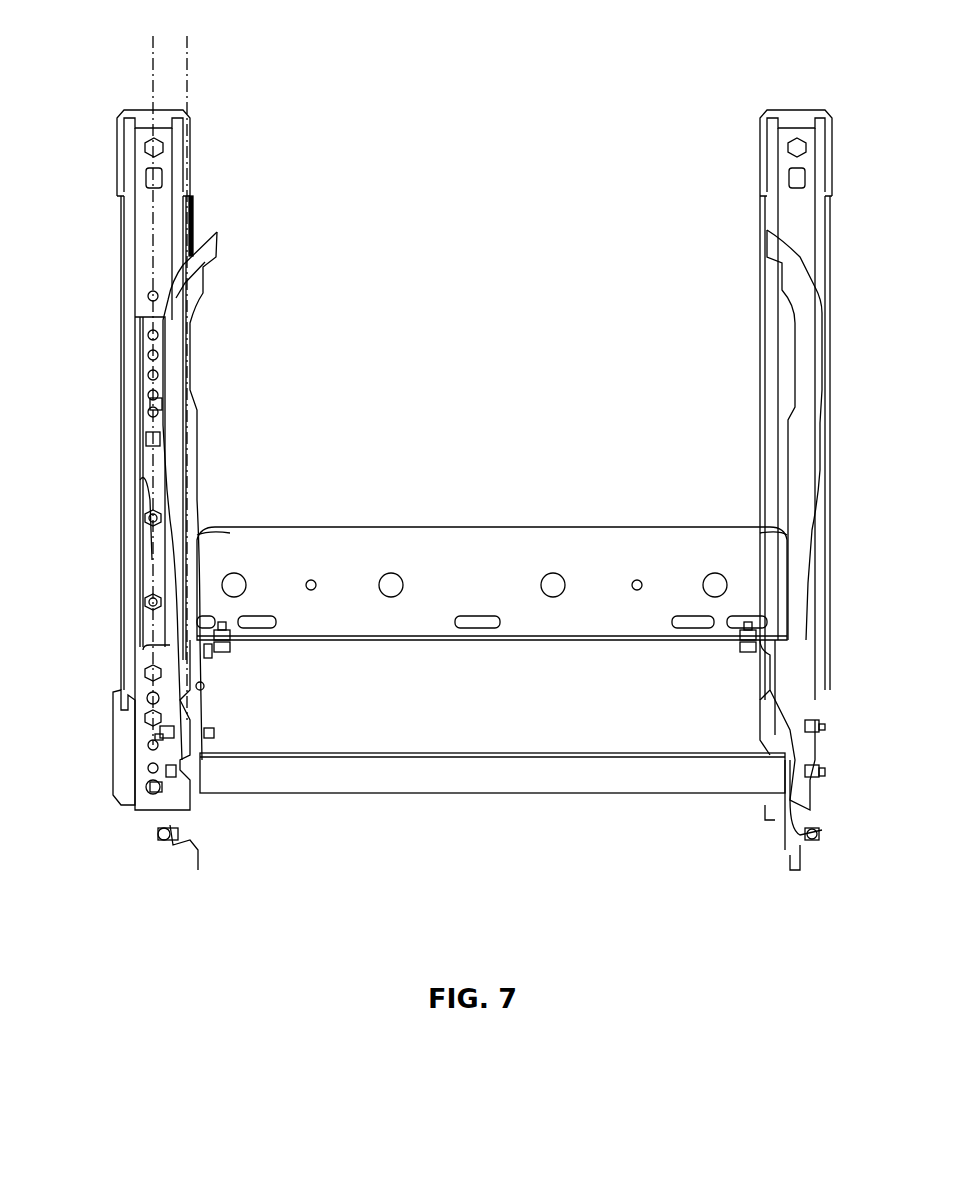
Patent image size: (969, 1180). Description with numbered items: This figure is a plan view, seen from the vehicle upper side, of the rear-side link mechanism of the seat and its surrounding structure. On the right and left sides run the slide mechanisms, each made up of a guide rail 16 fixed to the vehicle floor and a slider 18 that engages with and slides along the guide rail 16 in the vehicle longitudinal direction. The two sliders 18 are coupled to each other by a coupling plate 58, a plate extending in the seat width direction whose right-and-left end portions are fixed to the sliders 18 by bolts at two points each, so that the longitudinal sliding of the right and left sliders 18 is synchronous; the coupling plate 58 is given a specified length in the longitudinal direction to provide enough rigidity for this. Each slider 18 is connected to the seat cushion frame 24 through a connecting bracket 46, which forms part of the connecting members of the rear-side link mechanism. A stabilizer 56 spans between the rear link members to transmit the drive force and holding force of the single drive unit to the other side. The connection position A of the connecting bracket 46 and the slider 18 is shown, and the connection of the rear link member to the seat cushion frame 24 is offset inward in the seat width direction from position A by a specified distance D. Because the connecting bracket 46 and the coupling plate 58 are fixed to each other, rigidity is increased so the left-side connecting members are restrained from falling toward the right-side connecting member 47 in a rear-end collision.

The guide rail 16 is at (122, 265).
The slider 18 is at (140, 362).
The seat cushion frame 24 is at (198, 318).
The connecting bracket 46 is at (143, 665).
The right-side connecting member 47 is at (770, 720).
The stabilizer 56 is at (450, 795).
The coupling plate 58 is at (475, 555).
The connection position A is at (128, 700).
The specified distance D is at (185, 50).